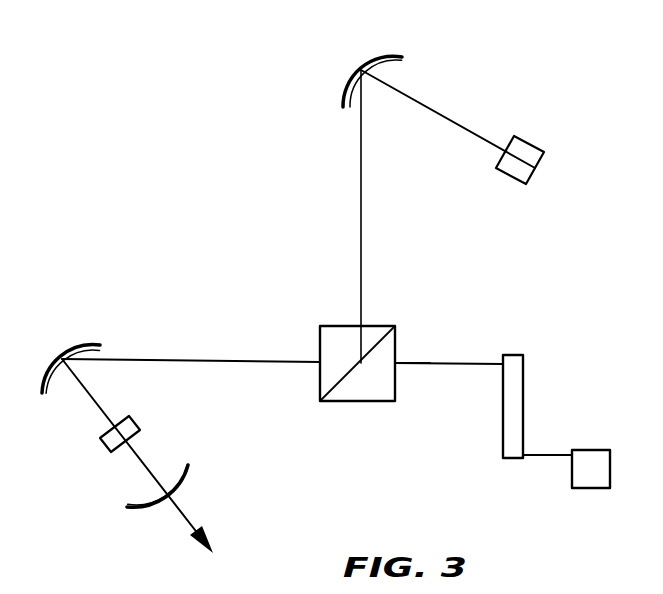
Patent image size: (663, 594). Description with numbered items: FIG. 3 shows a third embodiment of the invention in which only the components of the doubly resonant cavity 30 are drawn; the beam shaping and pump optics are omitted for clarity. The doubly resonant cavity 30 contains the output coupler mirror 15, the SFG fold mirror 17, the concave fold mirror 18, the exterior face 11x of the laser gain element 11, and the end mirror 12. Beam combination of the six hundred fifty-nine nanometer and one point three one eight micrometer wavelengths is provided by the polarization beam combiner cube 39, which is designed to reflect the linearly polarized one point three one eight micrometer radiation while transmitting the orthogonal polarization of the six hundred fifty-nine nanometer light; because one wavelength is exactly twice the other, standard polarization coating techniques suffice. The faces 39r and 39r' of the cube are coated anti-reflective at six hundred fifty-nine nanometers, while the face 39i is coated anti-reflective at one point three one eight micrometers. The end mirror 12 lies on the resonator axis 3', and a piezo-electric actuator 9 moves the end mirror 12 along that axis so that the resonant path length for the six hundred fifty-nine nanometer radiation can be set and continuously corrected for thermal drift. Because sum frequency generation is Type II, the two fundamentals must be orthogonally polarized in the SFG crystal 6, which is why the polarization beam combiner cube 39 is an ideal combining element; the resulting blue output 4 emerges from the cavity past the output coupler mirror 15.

The concave fold mirror 18 is at (356, 63).
The laser gain element 11 is at (531, 142).
The exterior face of laser gain element 11x is at (544, 166).
The doubly resonant cavity 30 is at (292, 214).
The polarization beam combiner cube 39 is at (358, 403).
The face of polarization beam combining cube 39i is at (382, 326).
The face of polarization beam combining cube 39r is at (441, 335).
The face of polarization beam combining cube 39r' is at (191, 334).
The resonator axis 3' is at (449, 395).
The end mirror 12 is at (513, 460).
The piezo-electric actuator 9 is at (590, 490).
The SFG fold mirror 17 is at (60, 356).
The SFG crystal 6 is at (100, 443).
The output coupler mirror 15 is at (140, 512).
The output 4 is at (142, 467).